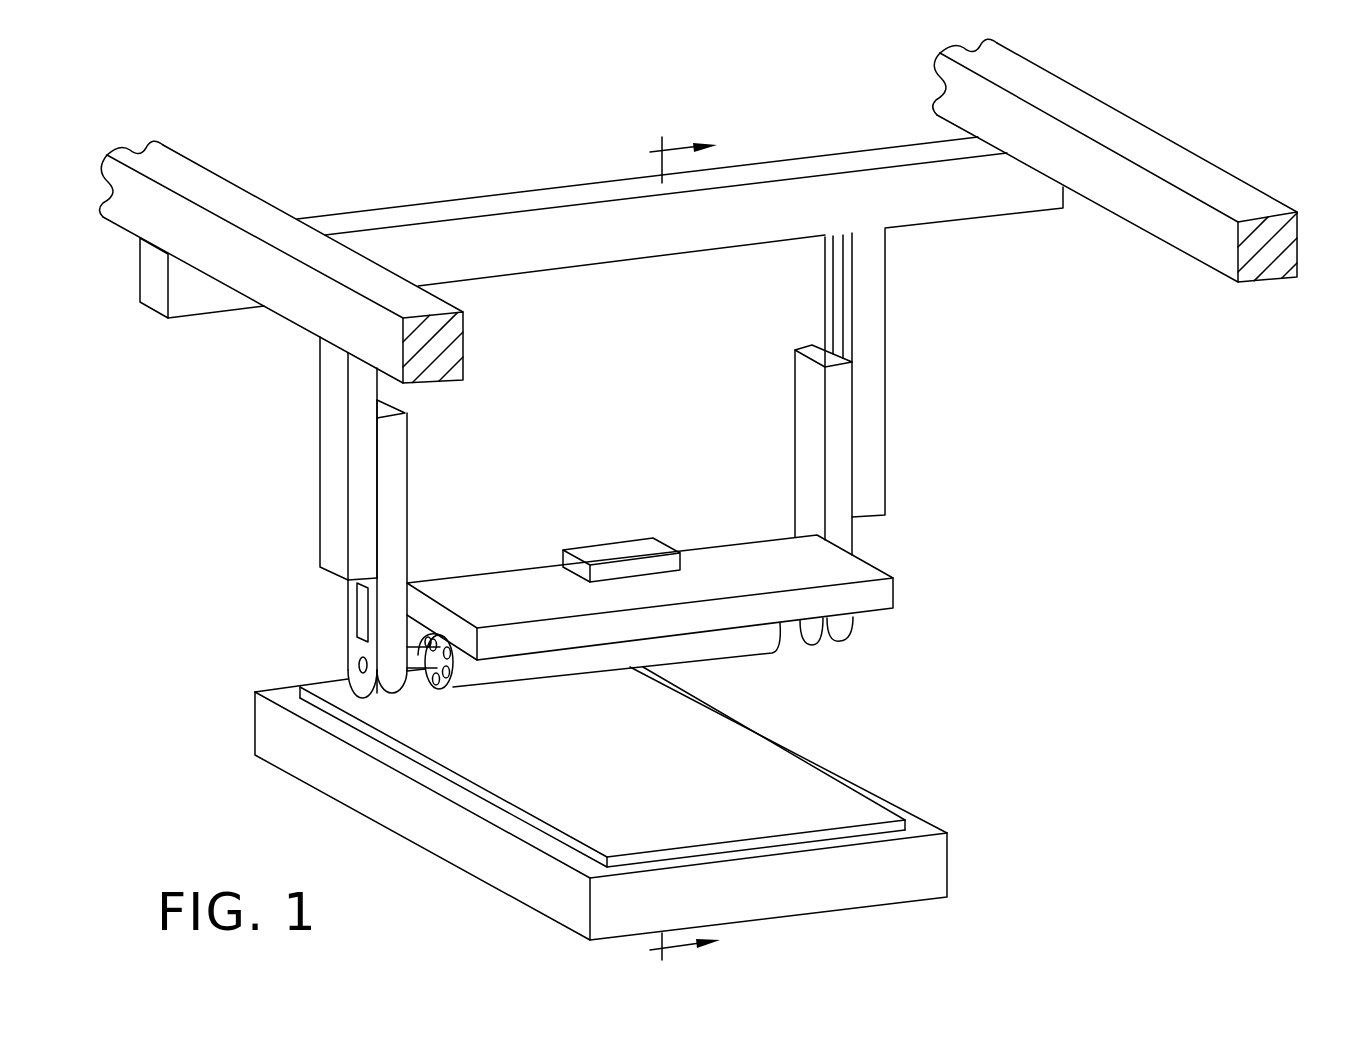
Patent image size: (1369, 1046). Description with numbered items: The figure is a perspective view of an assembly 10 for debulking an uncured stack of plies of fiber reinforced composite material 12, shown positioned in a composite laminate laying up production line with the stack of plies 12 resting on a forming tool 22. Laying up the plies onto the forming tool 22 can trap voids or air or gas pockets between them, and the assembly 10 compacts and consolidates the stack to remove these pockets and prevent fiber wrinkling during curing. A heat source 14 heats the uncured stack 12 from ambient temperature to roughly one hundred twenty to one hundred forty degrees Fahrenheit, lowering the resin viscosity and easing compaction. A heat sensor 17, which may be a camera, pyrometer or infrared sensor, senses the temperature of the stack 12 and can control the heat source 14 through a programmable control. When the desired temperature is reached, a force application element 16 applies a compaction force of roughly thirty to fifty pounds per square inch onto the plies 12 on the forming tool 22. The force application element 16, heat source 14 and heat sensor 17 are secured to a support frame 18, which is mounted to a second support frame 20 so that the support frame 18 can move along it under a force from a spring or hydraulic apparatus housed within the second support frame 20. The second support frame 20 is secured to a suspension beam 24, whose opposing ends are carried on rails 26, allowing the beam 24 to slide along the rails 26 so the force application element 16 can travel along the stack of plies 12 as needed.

The assembly for debulking 10 is at (607, 432).
The uncured stack of plies of fiber reinforced composite material 12 is at (853, 810).
The heat source 14 is at (847, 605).
The force application element 16 is at (467, 673).
The heat sensor 17 is at (613, 540).
The support frame 18 is at (395, 644).
The second support frame 20 is at (335, 435).
The forming tool 22 is at (905, 878).
The suspension beam 24 is at (878, 185).
The rails 26 is at (200, 240).